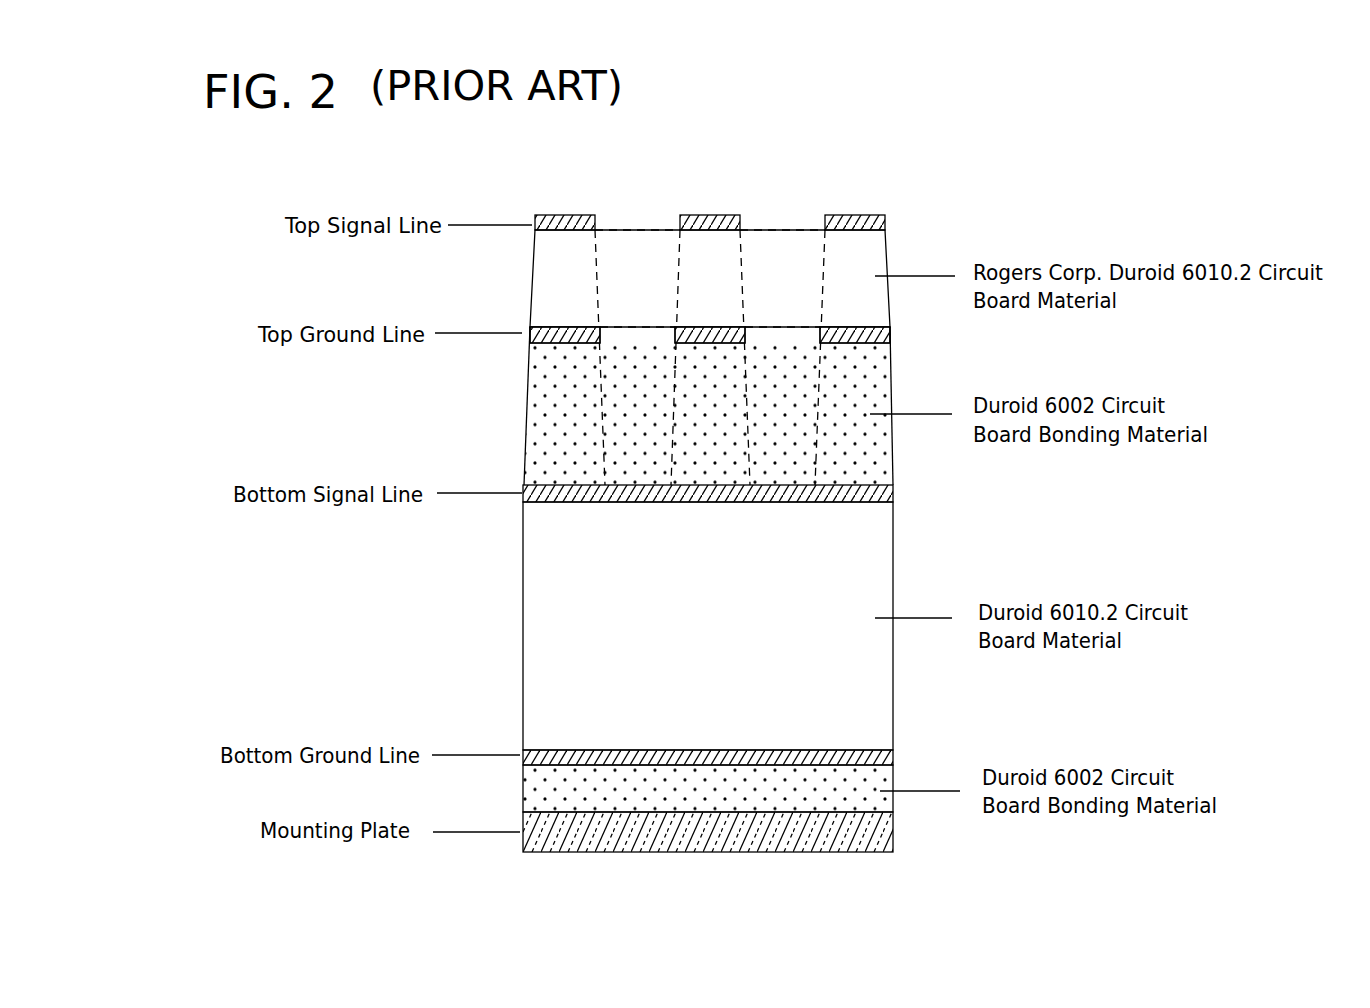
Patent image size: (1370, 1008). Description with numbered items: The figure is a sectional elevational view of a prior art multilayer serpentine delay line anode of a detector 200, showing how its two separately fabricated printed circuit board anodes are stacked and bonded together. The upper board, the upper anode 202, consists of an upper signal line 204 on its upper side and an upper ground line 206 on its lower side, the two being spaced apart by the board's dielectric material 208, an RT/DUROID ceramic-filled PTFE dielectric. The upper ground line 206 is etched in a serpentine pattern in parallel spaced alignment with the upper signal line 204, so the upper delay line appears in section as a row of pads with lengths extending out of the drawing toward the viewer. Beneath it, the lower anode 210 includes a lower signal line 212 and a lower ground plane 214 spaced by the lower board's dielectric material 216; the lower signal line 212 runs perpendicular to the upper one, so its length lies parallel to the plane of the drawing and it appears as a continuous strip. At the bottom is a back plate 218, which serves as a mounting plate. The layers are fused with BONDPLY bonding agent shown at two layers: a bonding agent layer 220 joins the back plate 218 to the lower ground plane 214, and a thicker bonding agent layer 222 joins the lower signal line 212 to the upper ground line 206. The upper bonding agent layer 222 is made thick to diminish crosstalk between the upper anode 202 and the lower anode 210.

The detector 200 is at (745, 136).
The upper anode 202 is at (257, 208).
The upper signal line 204 is at (560, 215).
The upper ground line 206 is at (535, 340).
The dielectric material 208 is at (553, 277).
The lower anode 210 is at (210, 763).
The lower signal line 212 is at (518, 500).
The lower ground plane 214 is at (522, 750).
The dielectric material 216 is at (553, 608).
The back plate 218 is at (520, 840).
The bonding agent layer 220 is at (523, 787).
The bonding agent layer 222 is at (553, 414).